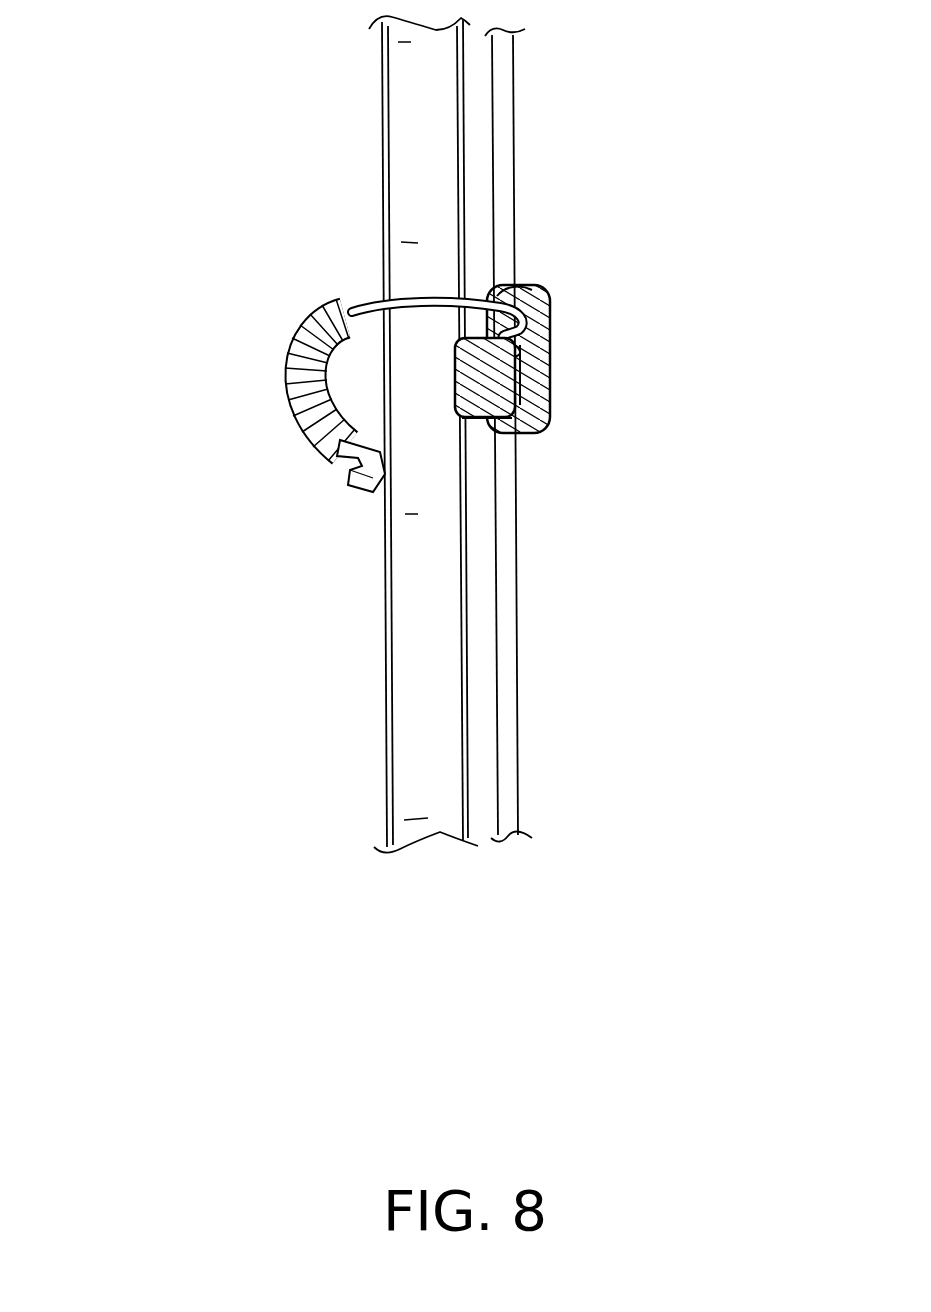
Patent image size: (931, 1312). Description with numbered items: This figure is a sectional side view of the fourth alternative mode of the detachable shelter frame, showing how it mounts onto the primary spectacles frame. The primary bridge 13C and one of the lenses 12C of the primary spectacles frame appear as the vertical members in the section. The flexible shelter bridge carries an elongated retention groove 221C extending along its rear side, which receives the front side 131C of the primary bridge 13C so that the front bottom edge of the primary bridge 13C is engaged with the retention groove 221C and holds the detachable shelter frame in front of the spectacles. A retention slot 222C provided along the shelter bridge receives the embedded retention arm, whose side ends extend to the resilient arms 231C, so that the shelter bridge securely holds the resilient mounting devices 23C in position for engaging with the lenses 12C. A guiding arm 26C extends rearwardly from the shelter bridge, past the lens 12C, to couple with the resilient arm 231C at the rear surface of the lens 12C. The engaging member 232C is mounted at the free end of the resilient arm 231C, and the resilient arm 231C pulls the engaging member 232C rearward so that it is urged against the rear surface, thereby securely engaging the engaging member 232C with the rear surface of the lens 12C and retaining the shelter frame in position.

The lens 12C is at (427, 755).
The primary bridge 13C is at (476, 418).
The resilient mounting device 23C is at (552, 287).
The guiding arm 26C is at (430, 298).
The front side of the primary bridge 131C is at (463, 393).
The retention groove 221C is at (537, 376).
The retention slot 222C is at (538, 283).
The resilient arm 231C is at (300, 340).
The engaging member 232C is at (345, 492).